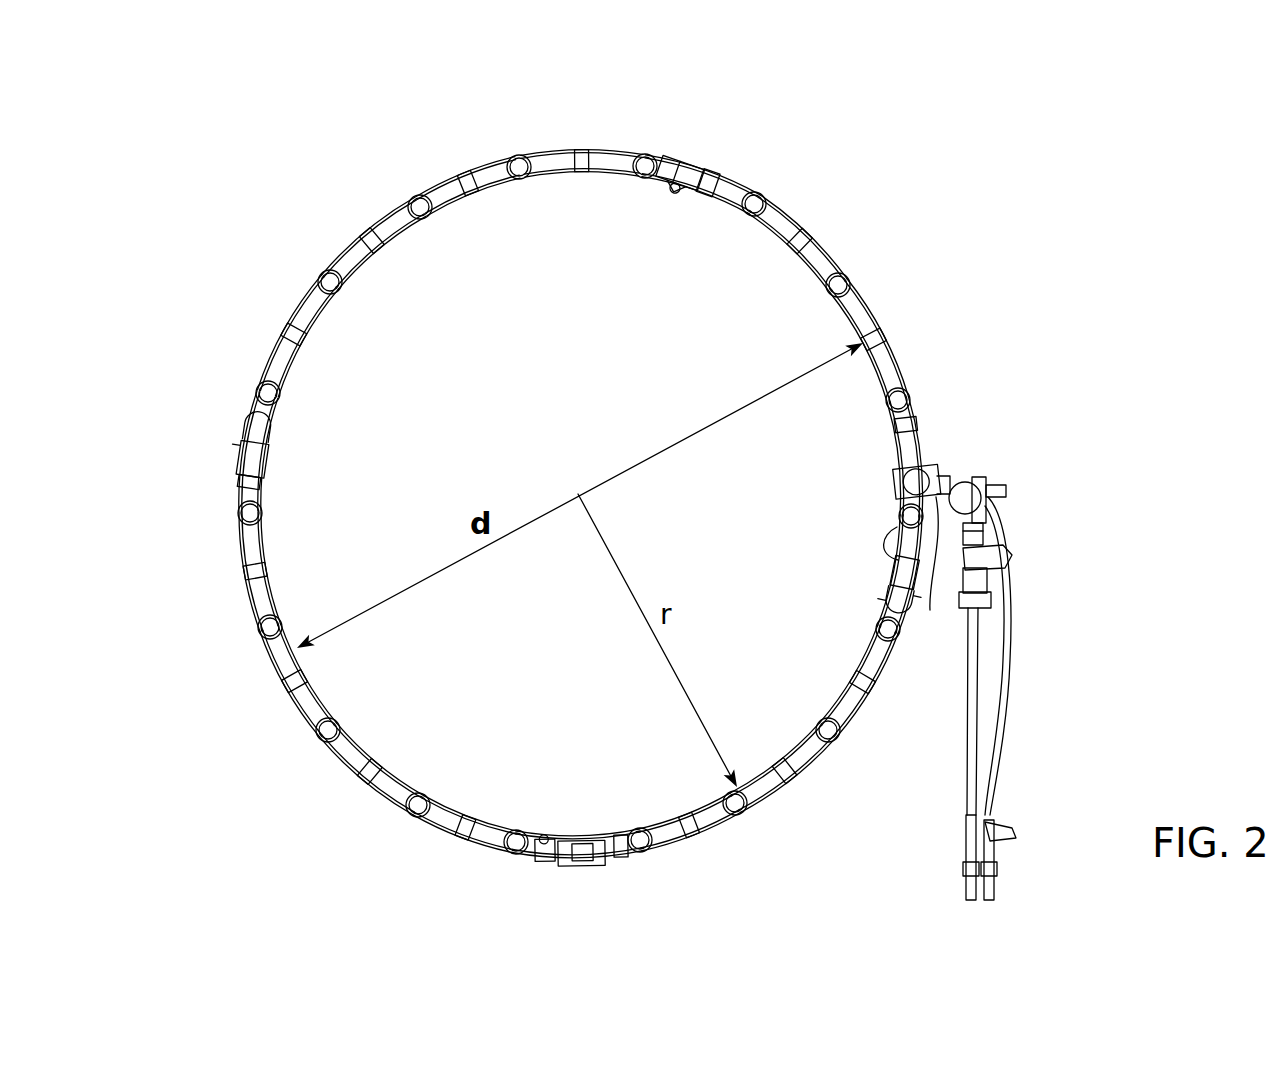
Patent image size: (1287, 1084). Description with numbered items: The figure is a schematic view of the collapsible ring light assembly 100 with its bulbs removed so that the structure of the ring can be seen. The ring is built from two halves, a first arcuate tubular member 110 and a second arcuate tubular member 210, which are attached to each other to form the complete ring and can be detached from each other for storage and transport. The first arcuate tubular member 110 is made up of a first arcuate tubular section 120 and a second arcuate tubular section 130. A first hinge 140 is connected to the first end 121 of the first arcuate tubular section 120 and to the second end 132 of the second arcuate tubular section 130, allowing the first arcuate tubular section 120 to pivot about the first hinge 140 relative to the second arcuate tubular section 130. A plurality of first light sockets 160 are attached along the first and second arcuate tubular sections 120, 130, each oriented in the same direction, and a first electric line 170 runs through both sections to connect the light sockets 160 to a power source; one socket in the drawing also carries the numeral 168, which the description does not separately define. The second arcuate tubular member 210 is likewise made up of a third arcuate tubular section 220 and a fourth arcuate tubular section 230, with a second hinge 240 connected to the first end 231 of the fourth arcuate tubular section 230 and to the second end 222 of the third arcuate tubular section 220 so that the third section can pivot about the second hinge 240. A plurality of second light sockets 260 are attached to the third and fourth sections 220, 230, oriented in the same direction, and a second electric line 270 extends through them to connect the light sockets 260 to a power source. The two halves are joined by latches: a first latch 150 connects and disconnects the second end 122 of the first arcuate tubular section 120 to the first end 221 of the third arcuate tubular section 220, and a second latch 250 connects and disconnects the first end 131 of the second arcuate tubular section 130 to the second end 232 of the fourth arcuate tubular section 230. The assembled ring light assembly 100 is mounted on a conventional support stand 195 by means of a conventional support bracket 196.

The collapsible ring light assembly 100 is at (936, 228).
The first arcuate tubular member 110 is at (796, 208).
The first arcuate tubular section 120 is at (905, 362).
The first end 121 is at (717, 170).
The second end 122 is at (893, 568).
The second arcuate tubular section 130 is at (488, 162).
The first end 131 is at (255, 424).
The second end 132 is at (674, 160).
The first hinge 140 is at (693, 162).
The first latch 150 is at (882, 598).
The first light sockets 160 is at (522, 181).
The light node 168 is at (424, 220).
The first electric line 170 is at (895, 540).
The support stand 195 is at (980, 658).
The support bracket 196 is at (991, 482).
The second arcuate tubular member 210 is at (338, 773).
The third arcuate tubular section 220 is at (790, 783).
The first end 221 is at (870, 634).
The second end 222 is at (575, 830).
The fourth arcuate tubular section 230 is at (250, 621).
The first end 231 is at (540, 828).
The second end 232 is at (266, 485).
The second hinge 240 is at (545, 862).
The second latch 250 is at (242, 462).
The second light sockets 260 is at (263, 513).
The second electric line 270 is at (1003, 585).